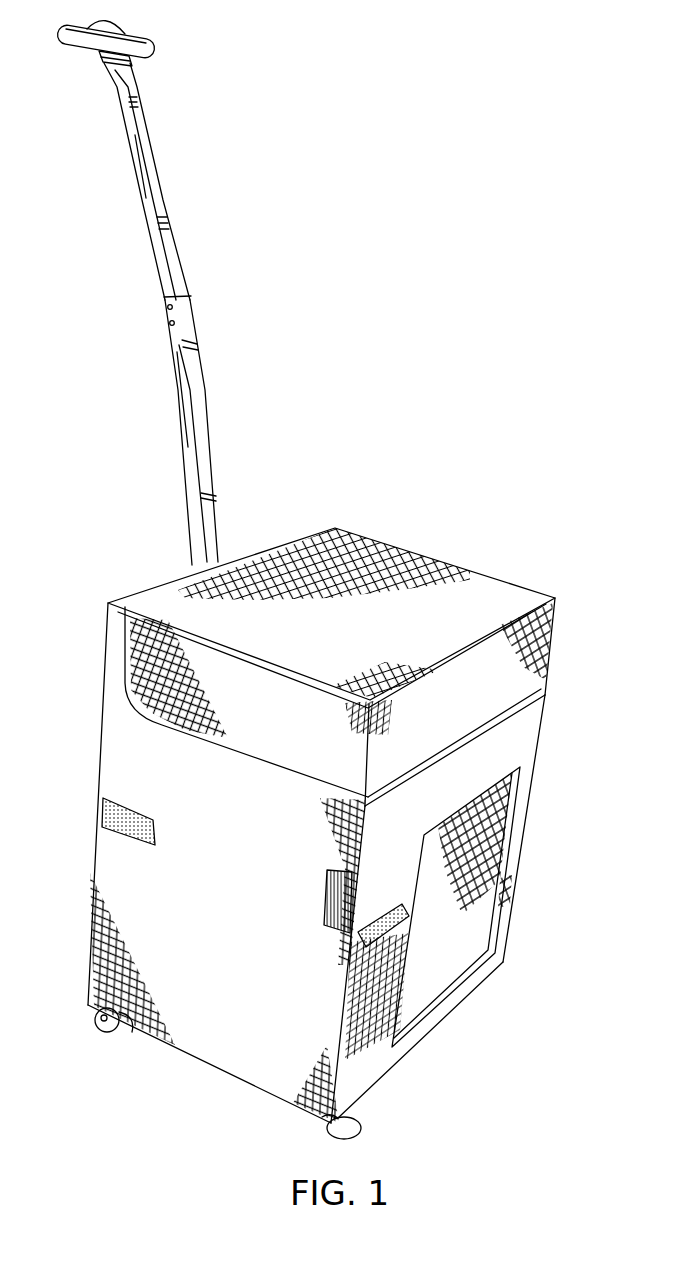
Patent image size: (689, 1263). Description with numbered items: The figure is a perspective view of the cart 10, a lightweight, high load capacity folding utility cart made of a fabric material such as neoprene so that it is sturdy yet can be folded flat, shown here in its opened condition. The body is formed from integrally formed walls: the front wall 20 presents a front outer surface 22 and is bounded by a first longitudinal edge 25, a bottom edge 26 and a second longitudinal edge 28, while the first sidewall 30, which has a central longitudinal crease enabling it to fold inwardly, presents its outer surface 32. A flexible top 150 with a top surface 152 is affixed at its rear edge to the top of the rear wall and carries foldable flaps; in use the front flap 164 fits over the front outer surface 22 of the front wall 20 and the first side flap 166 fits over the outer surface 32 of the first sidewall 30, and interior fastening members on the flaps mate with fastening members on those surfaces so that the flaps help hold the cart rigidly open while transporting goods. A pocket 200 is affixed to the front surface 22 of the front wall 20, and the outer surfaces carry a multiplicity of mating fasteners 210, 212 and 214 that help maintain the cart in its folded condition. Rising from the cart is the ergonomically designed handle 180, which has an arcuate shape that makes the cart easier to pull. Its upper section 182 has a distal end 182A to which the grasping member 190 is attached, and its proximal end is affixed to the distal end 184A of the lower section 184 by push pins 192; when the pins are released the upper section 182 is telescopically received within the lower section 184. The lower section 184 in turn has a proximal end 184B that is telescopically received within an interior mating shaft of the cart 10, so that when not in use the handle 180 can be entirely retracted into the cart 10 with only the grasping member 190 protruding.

The cart 10 is at (328, 815).
The front wall 20 is at (316, 874).
The front outer surface 22 is at (532, 726).
The first longitudinal edge 25 is at (350, 1103).
The bottom edge 26 is at (437, 1028).
The second longitudinal edge 28 is at (525, 823).
The first sidewall 30 is at (112, 850).
The outer surface 32 is at (250, 1072).
The flexible top 150 is at (328, 658).
The top surface 152 is at (142, 597).
The front flap 164 is at (533, 683).
The first side flap 166 is at (182, 653).
The handle 180 is at (168, 283).
The upper section 182 is at (126, 181).
The distal end 182A is at (176, 88).
The lower section 184 is at (197, 416).
The distal end 184A is at (176, 360).
The proximal end 184B is at (191, 297).
The grasping member 190 is at (149, 49).
The push pins 192 is at (167, 325).
The pocket 200 is at (476, 928).
The mating fastener 210 is at (383, 920).
The mating fastener 212 is at (327, 893).
The mating fastener 214 is at (140, 818).